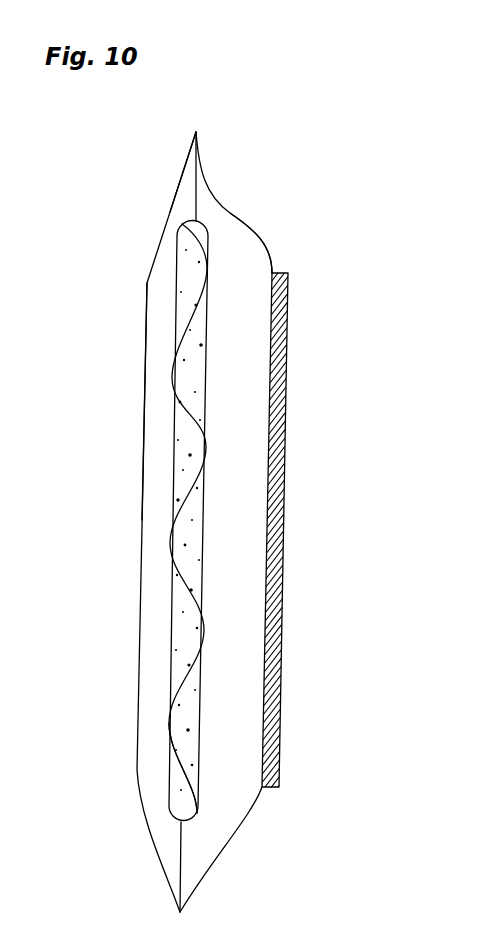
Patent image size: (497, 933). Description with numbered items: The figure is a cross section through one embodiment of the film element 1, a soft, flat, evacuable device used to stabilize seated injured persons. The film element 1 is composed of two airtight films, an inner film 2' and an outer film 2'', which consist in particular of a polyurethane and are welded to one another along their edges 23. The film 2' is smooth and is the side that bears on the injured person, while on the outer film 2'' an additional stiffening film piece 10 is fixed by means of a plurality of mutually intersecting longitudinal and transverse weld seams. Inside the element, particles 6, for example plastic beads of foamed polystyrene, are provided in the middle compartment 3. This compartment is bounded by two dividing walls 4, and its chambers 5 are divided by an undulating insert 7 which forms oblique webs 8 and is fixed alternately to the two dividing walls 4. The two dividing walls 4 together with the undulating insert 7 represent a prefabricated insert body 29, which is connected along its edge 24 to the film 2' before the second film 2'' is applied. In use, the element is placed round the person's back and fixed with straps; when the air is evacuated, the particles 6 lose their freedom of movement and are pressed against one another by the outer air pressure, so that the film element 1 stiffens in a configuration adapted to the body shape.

The film element 1 is at (285, 682).
The film 2' is at (108, 382).
The outer film 2'' is at (288, 235).
The middle compartment 3 is at (232, 262).
The dividing walls 4 is at (205, 583).
The chambers 5 is at (183, 377).
The particles 6 is at (182, 450).
The undulating insert 7 is at (193, 322).
The oblique webs 8 is at (187, 412).
The stiffening film piece 10 is at (285, 423).
The edges 23 is at (182, 910).
The edge 24 is at (196, 189).
The prefabricated insert body 29 is at (202, 743).